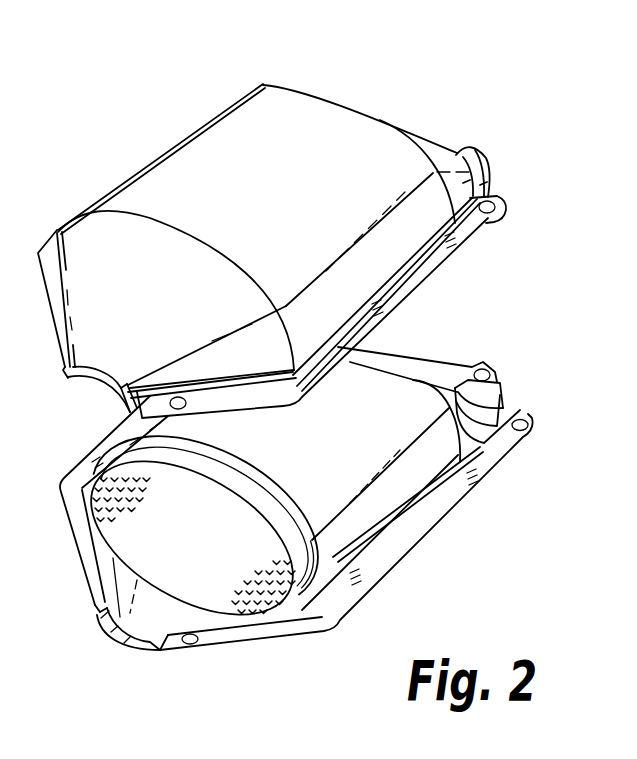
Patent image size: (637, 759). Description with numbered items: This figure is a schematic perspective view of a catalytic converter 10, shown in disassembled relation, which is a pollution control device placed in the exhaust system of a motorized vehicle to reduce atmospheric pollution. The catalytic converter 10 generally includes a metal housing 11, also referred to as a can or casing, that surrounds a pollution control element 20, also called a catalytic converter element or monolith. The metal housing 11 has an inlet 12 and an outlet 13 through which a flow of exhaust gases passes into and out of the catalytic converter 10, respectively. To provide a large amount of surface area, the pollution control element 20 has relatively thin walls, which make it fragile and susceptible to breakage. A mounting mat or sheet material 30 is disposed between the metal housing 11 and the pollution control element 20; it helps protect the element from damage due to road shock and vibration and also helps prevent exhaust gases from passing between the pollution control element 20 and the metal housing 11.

The catalytic converter 10 is at (399, 94).
The metal housing 11 is at (192, 168).
The inlet 12 is at (130, 641).
The outlet 13 is at (497, 410).
The pollution control element 20 is at (223, 582).
The mounting mat or sheet material 30 is at (370, 437).